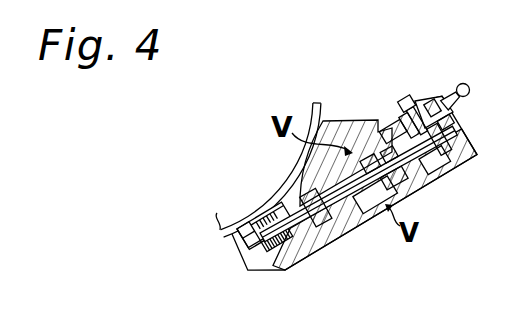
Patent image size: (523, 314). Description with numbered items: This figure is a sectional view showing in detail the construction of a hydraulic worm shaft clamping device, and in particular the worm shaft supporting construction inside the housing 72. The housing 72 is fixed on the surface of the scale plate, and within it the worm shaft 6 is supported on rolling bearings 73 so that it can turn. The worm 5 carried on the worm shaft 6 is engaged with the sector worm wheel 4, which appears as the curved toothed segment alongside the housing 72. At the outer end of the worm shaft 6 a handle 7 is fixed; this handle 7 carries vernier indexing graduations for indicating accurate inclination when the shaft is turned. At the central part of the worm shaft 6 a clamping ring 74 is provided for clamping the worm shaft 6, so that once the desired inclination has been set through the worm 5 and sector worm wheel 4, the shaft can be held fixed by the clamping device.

The sector worm wheel 4 is at (313, 108).
The worm 5 is at (257, 222).
The worm shaft 6 is at (304, 230).
The handle 7 is at (459, 84).
The housing 72 is at (358, 121).
The rolling bearings 73 is at (336, 203).
The clamping ring 74 is at (364, 200).